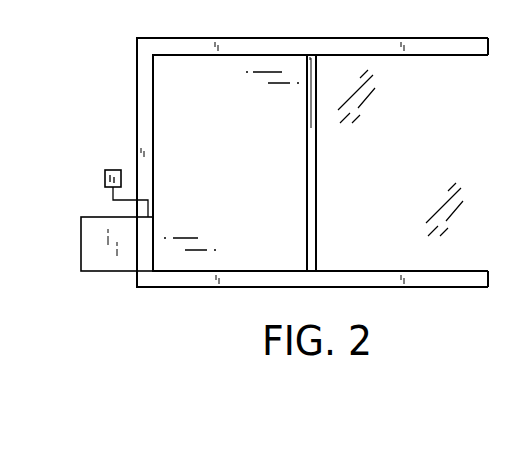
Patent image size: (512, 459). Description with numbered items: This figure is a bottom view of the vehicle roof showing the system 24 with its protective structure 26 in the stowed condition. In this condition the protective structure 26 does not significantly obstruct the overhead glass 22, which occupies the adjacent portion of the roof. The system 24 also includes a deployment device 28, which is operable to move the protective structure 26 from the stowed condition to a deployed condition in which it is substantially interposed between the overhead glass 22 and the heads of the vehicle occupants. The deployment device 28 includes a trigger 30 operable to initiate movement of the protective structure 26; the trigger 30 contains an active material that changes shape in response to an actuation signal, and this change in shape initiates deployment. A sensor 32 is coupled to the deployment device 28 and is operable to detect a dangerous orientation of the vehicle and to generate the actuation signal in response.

The overhead glass 22 is at (416, 175).
The system 24 is at (113, 148).
The protective structure 26 is at (244, 174).
The deployment device 28 is at (108, 283).
The trigger 30 is at (147, 252).
The sensor 32 is at (105, 176).